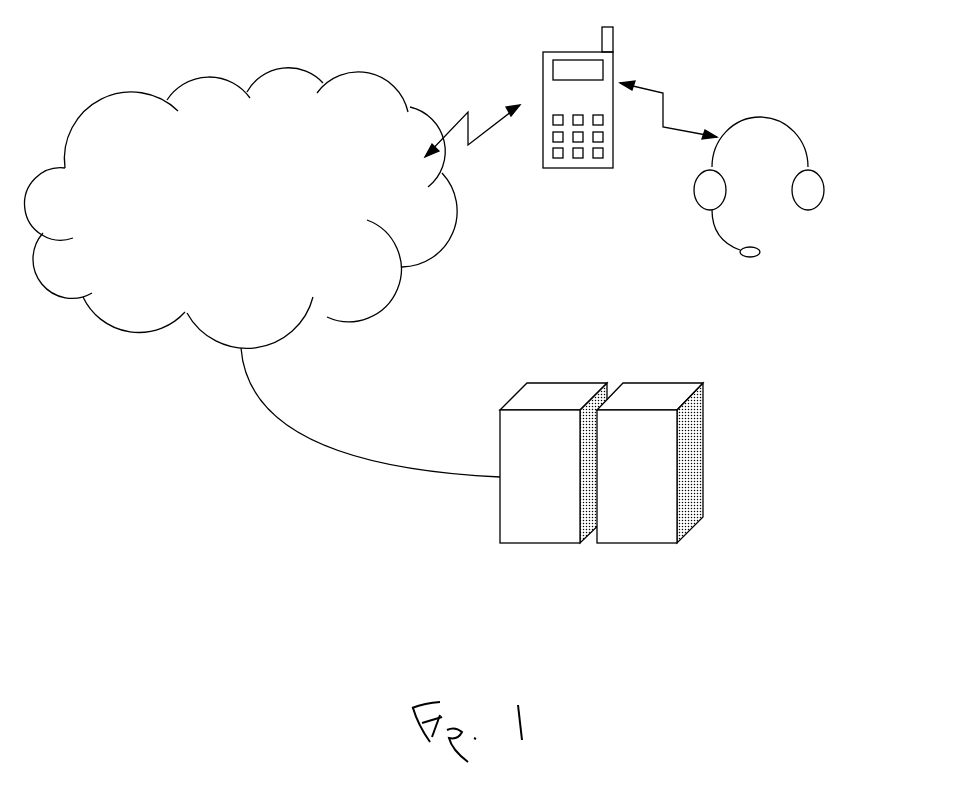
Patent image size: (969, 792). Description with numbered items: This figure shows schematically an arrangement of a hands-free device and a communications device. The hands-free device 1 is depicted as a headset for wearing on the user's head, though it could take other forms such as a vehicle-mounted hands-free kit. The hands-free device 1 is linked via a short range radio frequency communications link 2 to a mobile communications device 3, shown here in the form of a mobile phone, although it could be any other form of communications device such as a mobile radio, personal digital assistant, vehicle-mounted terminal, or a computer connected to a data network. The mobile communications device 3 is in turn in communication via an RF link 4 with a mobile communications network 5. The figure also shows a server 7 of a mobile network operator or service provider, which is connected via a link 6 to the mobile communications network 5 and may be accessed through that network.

The hands-free device 1 is at (759, 160).
The short range radio frequency communications link 2 is at (668, 101).
The mobile communications device 3 is at (564, 92).
The RF link 4 is at (472, 145).
The mobile communications network 5 is at (241, 208).
The link 6 is at (370, 412).
The server 7 is at (601, 443).